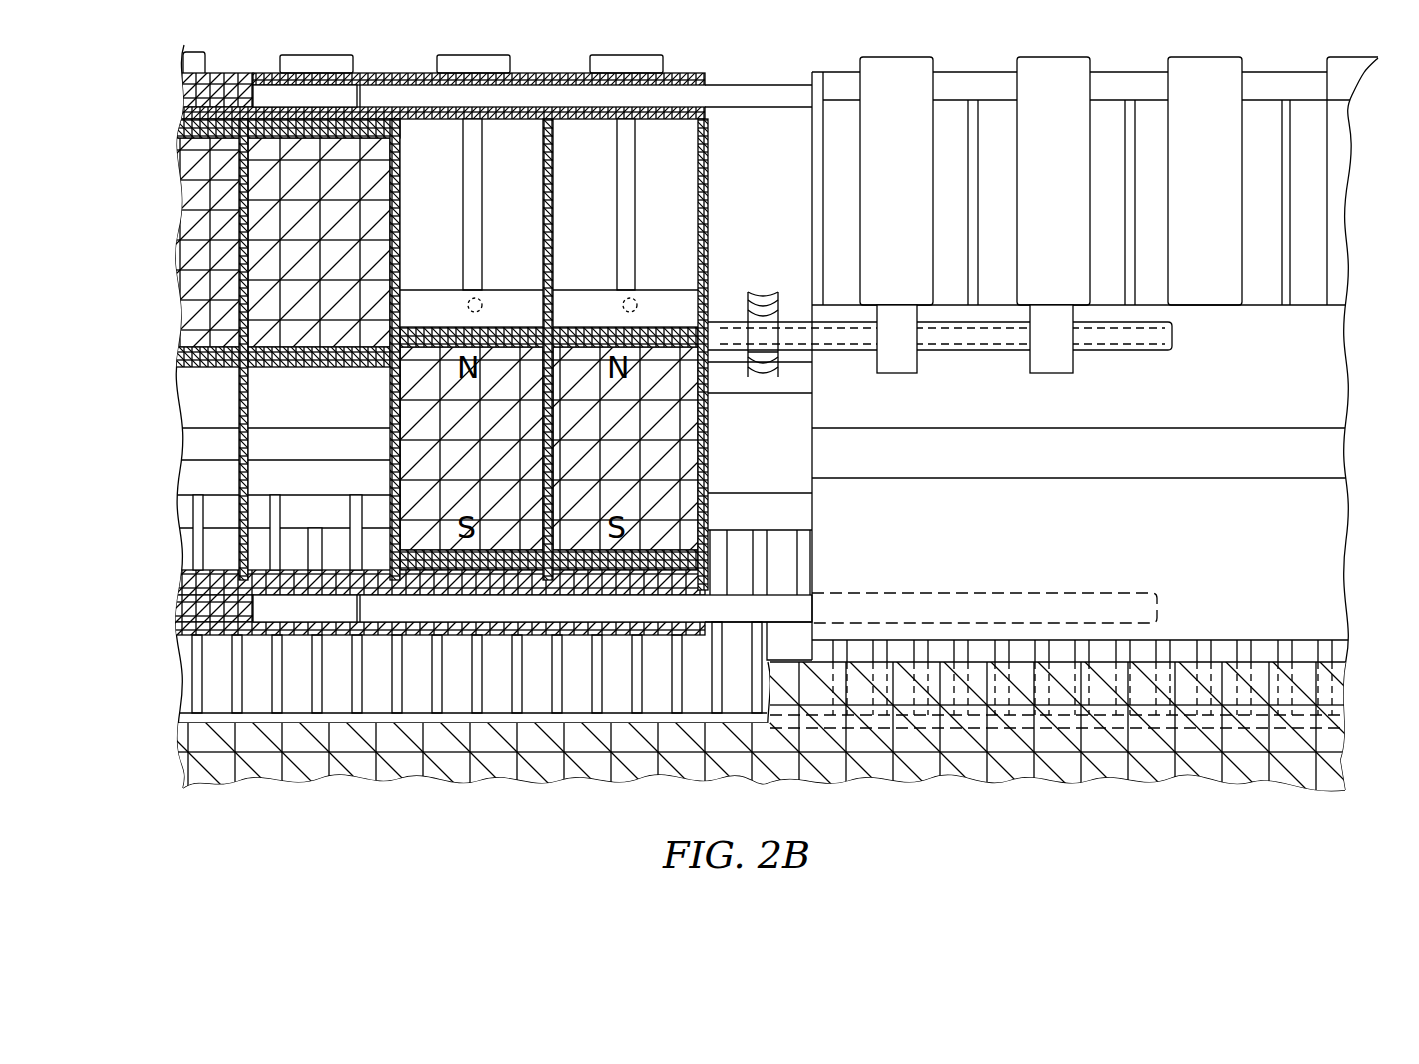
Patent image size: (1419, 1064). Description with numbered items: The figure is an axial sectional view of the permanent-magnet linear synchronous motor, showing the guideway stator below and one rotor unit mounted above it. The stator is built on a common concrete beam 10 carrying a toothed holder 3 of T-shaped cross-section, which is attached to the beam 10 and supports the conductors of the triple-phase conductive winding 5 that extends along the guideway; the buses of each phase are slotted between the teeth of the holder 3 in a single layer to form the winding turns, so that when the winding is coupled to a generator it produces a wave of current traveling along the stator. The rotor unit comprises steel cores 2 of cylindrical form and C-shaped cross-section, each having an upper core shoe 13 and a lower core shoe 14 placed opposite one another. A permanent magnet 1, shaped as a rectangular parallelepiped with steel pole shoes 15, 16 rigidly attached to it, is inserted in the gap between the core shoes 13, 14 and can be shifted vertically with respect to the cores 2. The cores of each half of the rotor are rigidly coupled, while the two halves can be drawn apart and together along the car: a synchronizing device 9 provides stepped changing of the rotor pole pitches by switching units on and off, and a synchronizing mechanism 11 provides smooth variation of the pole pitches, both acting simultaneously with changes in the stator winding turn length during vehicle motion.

The permanent magnet 1 is at (355, 168).
The steel core 2 is at (1308, 392).
The toothed holder 3 is at (198, 510).
The triple-phase conductive winding 5 is at (187, 450).
The synchronizing device 9 is at (910, 100).
The concrete beam 10 is at (1315, 757).
The synchronizing mechanism 11 is at (765, 290).
The upper core shoe 13 is at (500, 133).
The lower core shoe 14 is at (1300, 625).
The steel pole shoe 15 is at (205, 127).
The steel pole shoe 16 is at (210, 388).